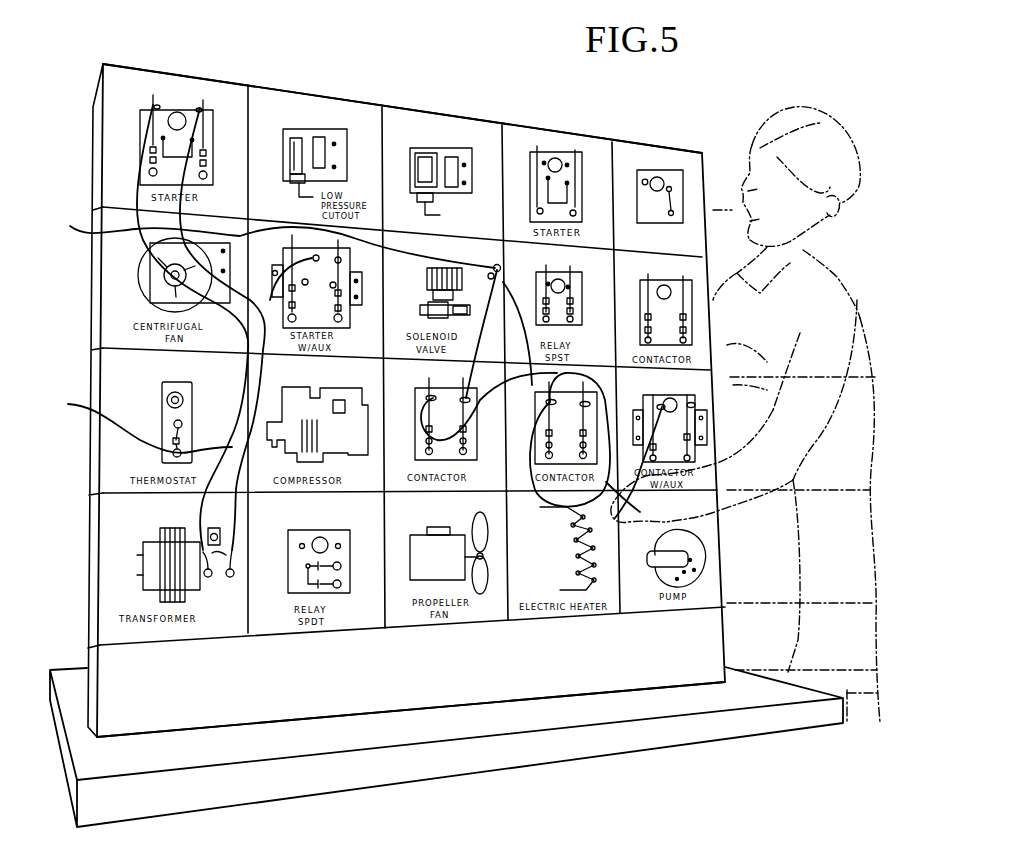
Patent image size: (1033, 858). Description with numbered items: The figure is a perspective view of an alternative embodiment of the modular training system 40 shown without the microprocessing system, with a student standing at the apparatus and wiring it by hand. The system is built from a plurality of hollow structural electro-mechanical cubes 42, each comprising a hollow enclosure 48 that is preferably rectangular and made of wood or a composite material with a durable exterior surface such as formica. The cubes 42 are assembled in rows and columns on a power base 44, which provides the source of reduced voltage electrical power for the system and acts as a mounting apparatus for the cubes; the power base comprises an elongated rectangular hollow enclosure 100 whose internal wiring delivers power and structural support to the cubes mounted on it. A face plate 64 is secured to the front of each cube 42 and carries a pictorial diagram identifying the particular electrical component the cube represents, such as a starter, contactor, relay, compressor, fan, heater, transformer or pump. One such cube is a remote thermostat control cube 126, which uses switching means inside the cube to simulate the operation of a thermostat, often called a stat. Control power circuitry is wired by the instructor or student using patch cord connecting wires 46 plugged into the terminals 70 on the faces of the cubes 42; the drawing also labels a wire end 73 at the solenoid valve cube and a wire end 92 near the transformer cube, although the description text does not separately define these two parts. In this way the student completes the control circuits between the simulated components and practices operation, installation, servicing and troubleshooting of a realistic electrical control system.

The modular training system 40 is at (397, 58).
The electro-mechanical cube 42 is at (86, 150).
The power base 44 is at (168, 733).
The patch cord connecting wire 46 is at (266, 333).
The hollow enclosure 48 is at (262, 84).
The face plate 64 is at (464, 127).
The terminal 70 is at (648, 178).
The connector plug 73 is at (501, 275).
The plug 92 is at (262, 483).
The elongated rectangular hollow enclosure 100 is at (245, 735).
The remote thermostat control cube 126 is at (92, 376).